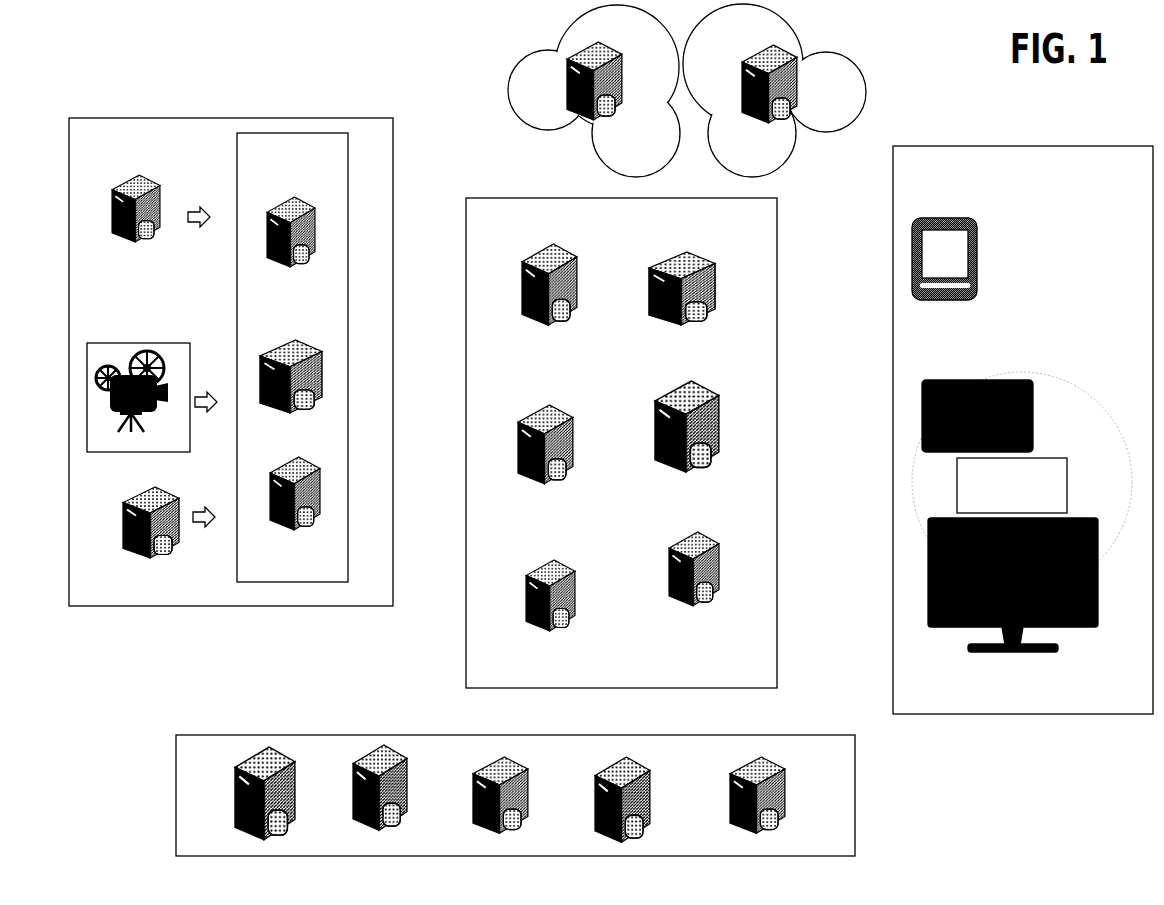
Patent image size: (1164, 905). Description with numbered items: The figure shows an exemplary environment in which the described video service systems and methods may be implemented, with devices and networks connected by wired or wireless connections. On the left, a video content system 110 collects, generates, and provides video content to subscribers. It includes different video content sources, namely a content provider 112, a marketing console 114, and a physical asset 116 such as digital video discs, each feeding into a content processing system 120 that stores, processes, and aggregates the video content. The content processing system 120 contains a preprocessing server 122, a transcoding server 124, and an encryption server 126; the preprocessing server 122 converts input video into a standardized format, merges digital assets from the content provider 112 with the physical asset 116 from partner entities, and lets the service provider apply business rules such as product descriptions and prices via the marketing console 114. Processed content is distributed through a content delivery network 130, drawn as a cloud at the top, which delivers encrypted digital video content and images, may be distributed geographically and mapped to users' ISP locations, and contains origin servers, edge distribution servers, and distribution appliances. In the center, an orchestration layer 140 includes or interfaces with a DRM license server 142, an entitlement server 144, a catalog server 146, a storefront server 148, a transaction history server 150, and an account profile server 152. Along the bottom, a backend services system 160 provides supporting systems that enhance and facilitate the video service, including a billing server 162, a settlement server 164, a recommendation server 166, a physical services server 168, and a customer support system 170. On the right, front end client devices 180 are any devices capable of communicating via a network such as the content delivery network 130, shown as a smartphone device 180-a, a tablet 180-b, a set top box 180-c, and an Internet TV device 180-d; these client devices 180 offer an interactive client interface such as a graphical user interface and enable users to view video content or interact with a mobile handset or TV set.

The video content system 110 is at (277, 118).
The content provider 112 is at (152, 343).
The marketing console 114 is at (142, 175).
The physical asset 116 is at (128, 498).
The content processing system 120 is at (292, 357).
The preprocessing server 122 is at (296, 198).
The transcoding server 124 is at (312, 458).
The encryption server 126 is at (298, 340).
The content delivery network 130 is at (687, 90).
The orchestration layer 140 is at (466, 660).
The DRM license server 142 is at (656, 258).
The entitlement server 144 is at (521, 258).
The catalog server 146 is at (530, 410).
The storefront server 148 is at (650, 426).
The transaction history server 150 is at (524, 583).
The account profile server 152 is at (685, 536).
The backend services system 160 is at (176, 787).
The billing server 162 is at (240, 800).
The settlement server 164 is at (353, 800).
The recommendation server 166 is at (473, 810).
The physical services server 168 is at (597, 810).
The customer support system 170 is at (730, 805).
The client devices 180 is at (1098, 714).
The smartphone device 180-a is at (953, 218).
The tablet 180-b is at (928, 380).
The set top box 180-c is at (1012, 485).
The Internet TV device 180-d is at (1073, 628).